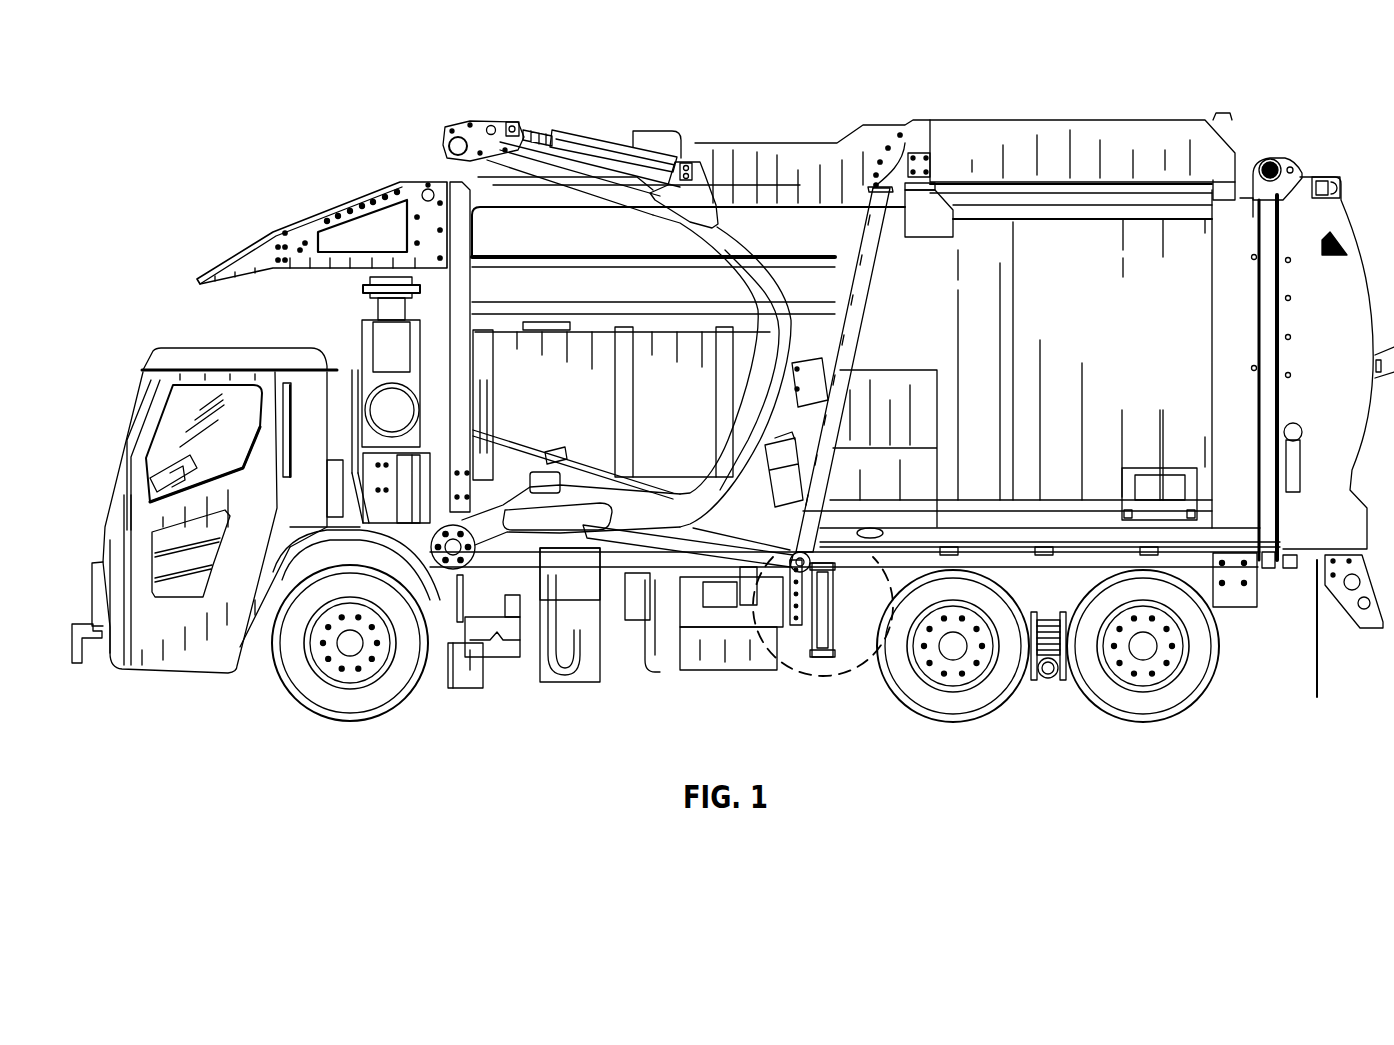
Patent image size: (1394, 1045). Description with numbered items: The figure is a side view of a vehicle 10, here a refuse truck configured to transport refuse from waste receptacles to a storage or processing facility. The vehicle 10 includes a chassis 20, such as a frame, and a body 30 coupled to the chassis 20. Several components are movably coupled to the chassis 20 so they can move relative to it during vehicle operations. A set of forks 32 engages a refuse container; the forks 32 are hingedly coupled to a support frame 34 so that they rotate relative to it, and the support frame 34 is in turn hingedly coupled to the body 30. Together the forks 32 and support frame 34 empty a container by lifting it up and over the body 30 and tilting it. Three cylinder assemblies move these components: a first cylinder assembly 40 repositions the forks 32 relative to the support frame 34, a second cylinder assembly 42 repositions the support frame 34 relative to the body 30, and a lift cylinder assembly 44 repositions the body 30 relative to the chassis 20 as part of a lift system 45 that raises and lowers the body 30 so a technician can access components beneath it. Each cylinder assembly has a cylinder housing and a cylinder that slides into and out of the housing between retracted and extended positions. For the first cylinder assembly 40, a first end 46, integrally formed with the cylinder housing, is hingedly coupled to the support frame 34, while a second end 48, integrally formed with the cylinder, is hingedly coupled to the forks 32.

The vehicle 10 is at (241, 101).
The chassis 20 is at (1240, 612).
The body 30 is at (1106, 270).
The forks 32 is at (637, 134).
The support frame 34 is at (528, 134).
The first cylinder assembly 40 is at (580, 145).
The second cylinder assembly 42 is at (698, 548).
The lift cylinder assembly 44 is at (820, 560).
The lift system 45 is at (822, 684).
The first end 46 is at (688, 158).
The second end 48 is at (517, 127).